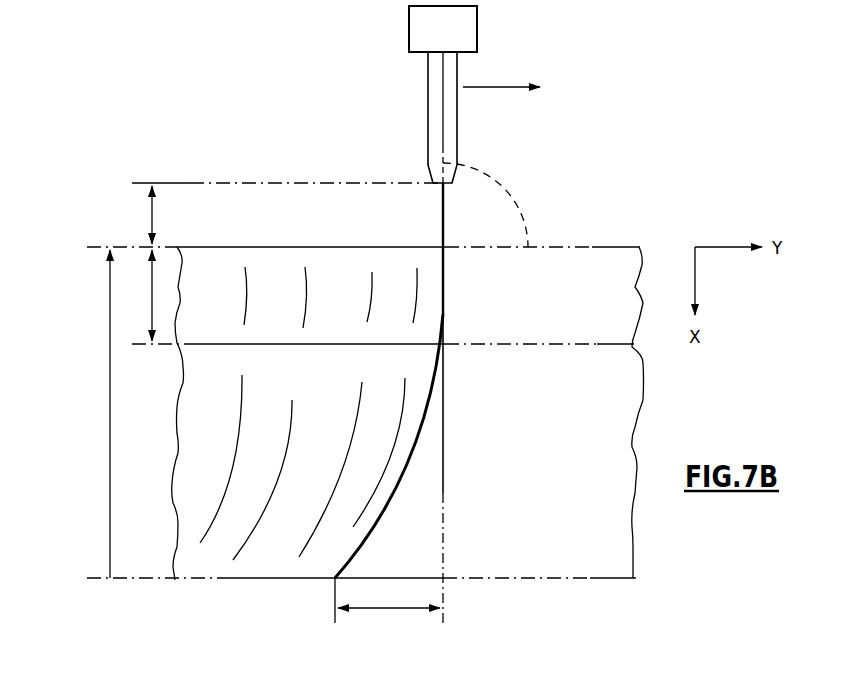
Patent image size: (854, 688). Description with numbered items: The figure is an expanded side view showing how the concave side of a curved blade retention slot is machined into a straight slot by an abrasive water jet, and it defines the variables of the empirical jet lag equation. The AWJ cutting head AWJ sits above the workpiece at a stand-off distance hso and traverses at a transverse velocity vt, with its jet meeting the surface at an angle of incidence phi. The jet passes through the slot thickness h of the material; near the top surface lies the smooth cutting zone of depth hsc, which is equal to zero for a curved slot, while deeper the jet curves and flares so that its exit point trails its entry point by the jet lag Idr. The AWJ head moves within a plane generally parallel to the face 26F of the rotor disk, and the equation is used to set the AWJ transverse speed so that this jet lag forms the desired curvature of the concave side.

The face of the rotor disk 26F is at (592, 247).
The abrasive water jet cutting head AWJ is at (477, 32).
The transverse velocity of AWJ cutting head vt is at (503, 87).
The angle of incidence phi is at (485, 205).
The AWJ cutting head stand-off distance hso is at (150, 213).
The depth of smooth cutting zone hsc is at (150, 298).
The slot thickness h is at (110, 410).
The jet lag Idr is at (388, 608).